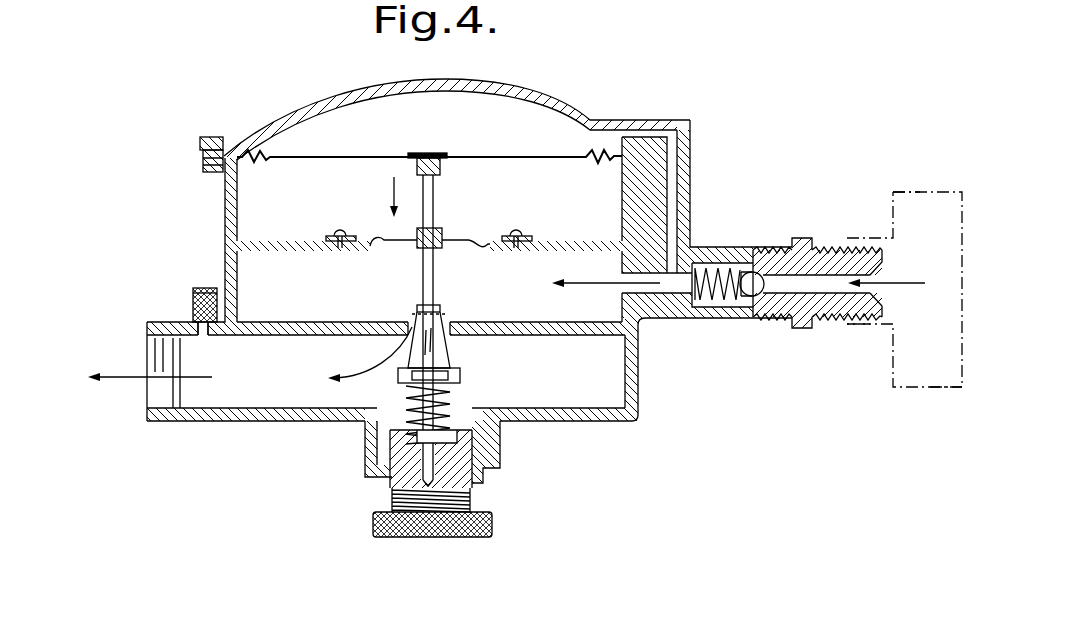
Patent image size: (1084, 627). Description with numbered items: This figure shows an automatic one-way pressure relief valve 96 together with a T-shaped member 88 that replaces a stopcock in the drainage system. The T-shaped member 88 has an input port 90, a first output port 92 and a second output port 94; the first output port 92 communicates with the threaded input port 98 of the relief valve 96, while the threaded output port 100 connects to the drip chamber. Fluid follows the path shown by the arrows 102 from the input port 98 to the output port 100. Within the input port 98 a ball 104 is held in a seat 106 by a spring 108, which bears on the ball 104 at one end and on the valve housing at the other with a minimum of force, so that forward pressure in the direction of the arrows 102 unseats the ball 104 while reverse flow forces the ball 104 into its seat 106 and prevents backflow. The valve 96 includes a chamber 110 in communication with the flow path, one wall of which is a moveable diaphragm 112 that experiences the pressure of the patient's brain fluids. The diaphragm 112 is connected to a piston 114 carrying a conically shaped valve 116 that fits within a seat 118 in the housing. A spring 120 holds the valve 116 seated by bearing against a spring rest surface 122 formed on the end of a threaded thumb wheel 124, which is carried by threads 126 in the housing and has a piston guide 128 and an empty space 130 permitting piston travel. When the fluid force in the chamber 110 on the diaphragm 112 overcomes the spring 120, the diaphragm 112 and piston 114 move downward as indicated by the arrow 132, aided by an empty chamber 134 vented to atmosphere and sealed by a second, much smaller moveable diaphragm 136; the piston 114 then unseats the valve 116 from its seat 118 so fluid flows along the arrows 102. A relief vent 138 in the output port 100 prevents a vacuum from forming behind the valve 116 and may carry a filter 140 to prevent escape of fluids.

The T-shaped member 88 is at (893, 192).
The input port 90 is at (923, 185).
The first output port 92 is at (857, 333).
The second output port 94 is at (940, 390).
The one-way pressure relief valve 96 is at (520, 80).
The input port 98 is at (820, 257).
The output port 100 is at (167, 397).
The arrows 102 is at (590, 284).
The ball 104 is at (748, 296).
The seat 106 is at (773, 258).
The spring 108 is at (713, 300).
The chamber 110 is at (356, 139).
The moveable diaphragm 112 is at (494, 156).
The piston 114 is at (436, 203).
The conically shaped valve 116 is at (437, 348).
The seat 118 is at (440, 312).
The spring 120 is at (447, 402).
The spring rest surface 122 is at (410, 443).
The threaded thumb wheel 124 is at (447, 538).
The threads 126 is at (483, 470).
The piston guide 128 is at (447, 420).
The empty space 130 is at (400, 489).
The arrow 132 is at (392, 190).
The empty chamber 134 is at (584, 211).
The second moveable diaphragm 136 is at (415, 246).
The relief vent 138 is at (205, 337).
The filter 140 is at (203, 290).